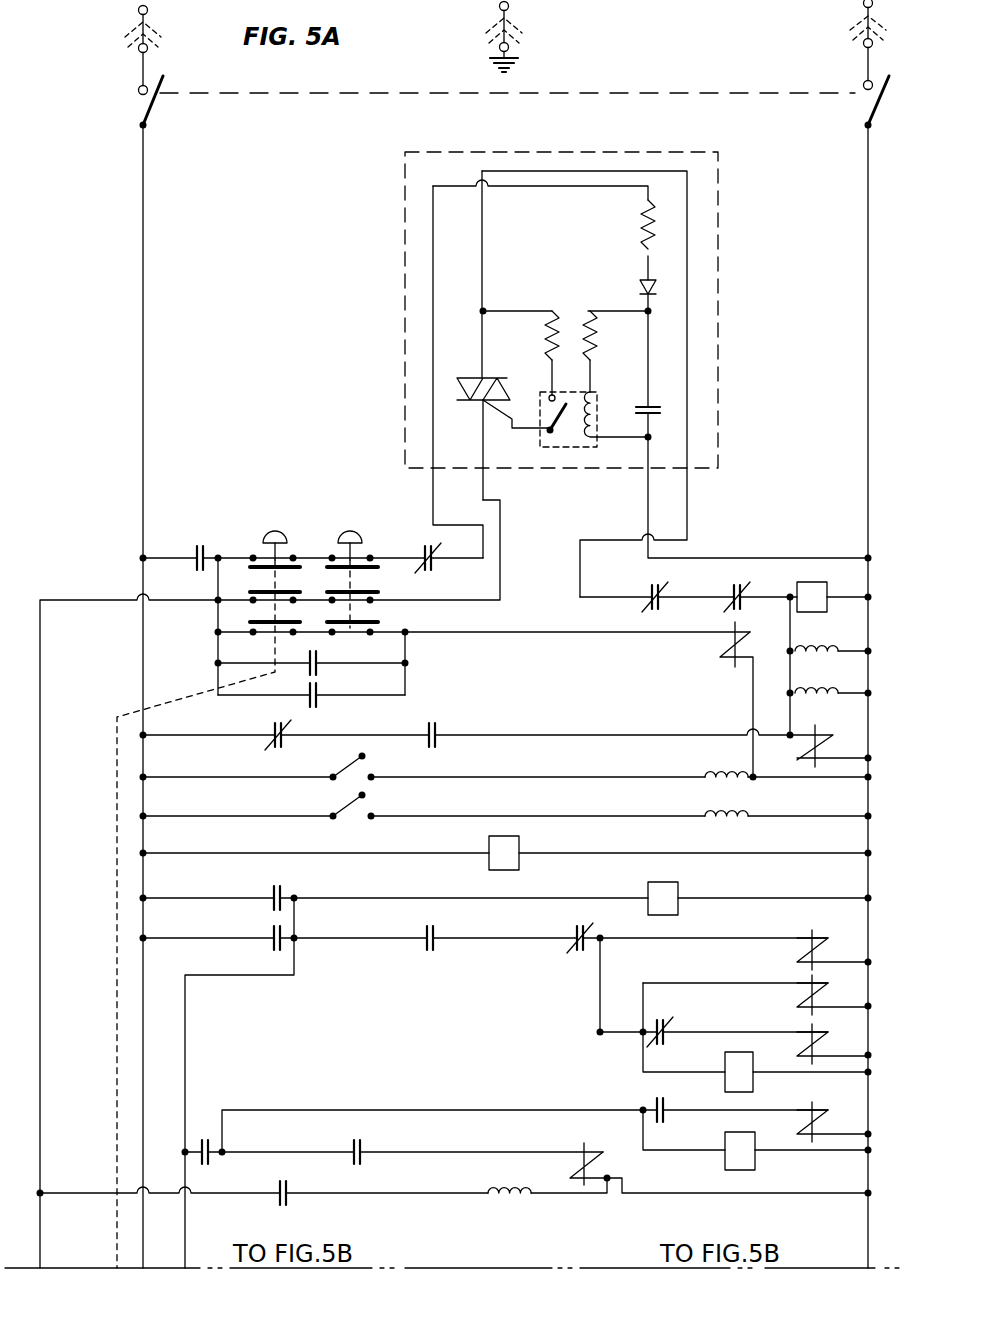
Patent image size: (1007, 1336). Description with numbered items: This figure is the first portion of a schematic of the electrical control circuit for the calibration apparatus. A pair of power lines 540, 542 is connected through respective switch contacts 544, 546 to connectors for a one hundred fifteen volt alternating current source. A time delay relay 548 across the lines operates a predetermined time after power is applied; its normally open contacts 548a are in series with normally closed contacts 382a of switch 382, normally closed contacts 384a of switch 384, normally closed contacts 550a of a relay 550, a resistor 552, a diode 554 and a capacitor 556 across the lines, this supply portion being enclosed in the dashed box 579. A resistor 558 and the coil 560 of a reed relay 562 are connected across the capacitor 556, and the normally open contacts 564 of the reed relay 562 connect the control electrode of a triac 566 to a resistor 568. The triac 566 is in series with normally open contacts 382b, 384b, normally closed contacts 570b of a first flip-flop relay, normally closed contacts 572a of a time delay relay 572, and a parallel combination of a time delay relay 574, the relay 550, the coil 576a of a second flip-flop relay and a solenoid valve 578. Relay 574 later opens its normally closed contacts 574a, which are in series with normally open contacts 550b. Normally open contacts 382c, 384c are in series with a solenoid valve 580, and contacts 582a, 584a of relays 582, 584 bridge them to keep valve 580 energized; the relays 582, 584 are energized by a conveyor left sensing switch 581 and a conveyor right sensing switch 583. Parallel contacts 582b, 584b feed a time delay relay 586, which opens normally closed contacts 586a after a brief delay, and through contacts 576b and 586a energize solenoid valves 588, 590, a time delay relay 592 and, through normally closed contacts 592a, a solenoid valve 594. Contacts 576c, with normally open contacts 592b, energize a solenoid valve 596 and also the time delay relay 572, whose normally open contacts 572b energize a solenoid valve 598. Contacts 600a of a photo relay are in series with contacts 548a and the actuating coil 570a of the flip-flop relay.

The switch contact 544 is at (152, 100).
The switch contact 546 is at (870, 113).
The power line 540 is at (143, 250).
The power line 542 is at (868, 258).
The power supply circuit 579 is at (405, 240).
The resistor 552 is at (656, 232).
The diode 554 is at (656, 292).
The capacitor 556 is at (660, 405).
The resistor 558 is at (610, 302).
The coil 560 is at (595, 414).
The reed relay 562 is at (563, 448).
The normally open contacts 564 is at (548, 430).
The triac 566 is at (497, 376).
The resistor 568 is at (554, 310).
The normally open contacts 548a is at (214, 537).
The normally closed contacts 550a is at (437, 554).
The switch 382 is at (275, 534).
The switch 384 is at (350, 534).
The normally closed contacts 382a is at (277, 553).
The normally open contacts 382b is at (250, 584).
The normally open contacts 382c is at (250, 625).
The normally closed contacts 384a is at (362, 555).
The normally open contacts 384b is at (378, 584).
The normally open contacts 384c is at (380, 617).
The contacts 582a is at (318, 662).
The contacts 584a is at (318, 694).
The normally closed contacts 570b is at (652, 596).
The normally closed contacts 572a is at (736, 585).
The time delay relay 574 is at (810, 581).
The relay 550 is at (795, 651).
The coil 576a is at (795, 693).
The solenoid valve 578 is at (813, 734).
The solenoid valve 580 is at (722, 654).
The normally closed contacts 574a is at (284, 744).
The normally open contacts 550b is at (436, 734).
The conveyor left sensing switch 581 is at (373, 764).
The conveyor right sensing switch 583 is at (373, 804).
The relay 582 is at (721, 770).
The relay 584 is at (721, 810).
The time delay relay 548 is at (518, 850).
The normally open contacts 582b is at (283, 896).
The normally open contacts 584b is at (290, 936).
The time delay relay 586 is at (678, 895).
The contacts 576b is at (428, 950).
The normally closed contacts 586a is at (578, 950).
The solenoid valve 588 is at (805, 946).
The solenoid valve 590 is at (799, 992).
The normally closed contacts 592a is at (662, 1030).
The solenoid valve 594 is at (799, 1042).
The time delay relay 592 is at (753, 1081).
The normally open contacts 572b is at (656, 1098).
The solenoid valve 598 is at (803, 1140).
The time delay relay 572 is at (756, 1159).
The contacts 576c is at (218, 1138).
The normally open contacts 592b is at (364, 1146).
The solenoid valve 596 is at (604, 1164).
The contacts 600a is at (288, 1186).
The coil 570a is at (500, 1200).